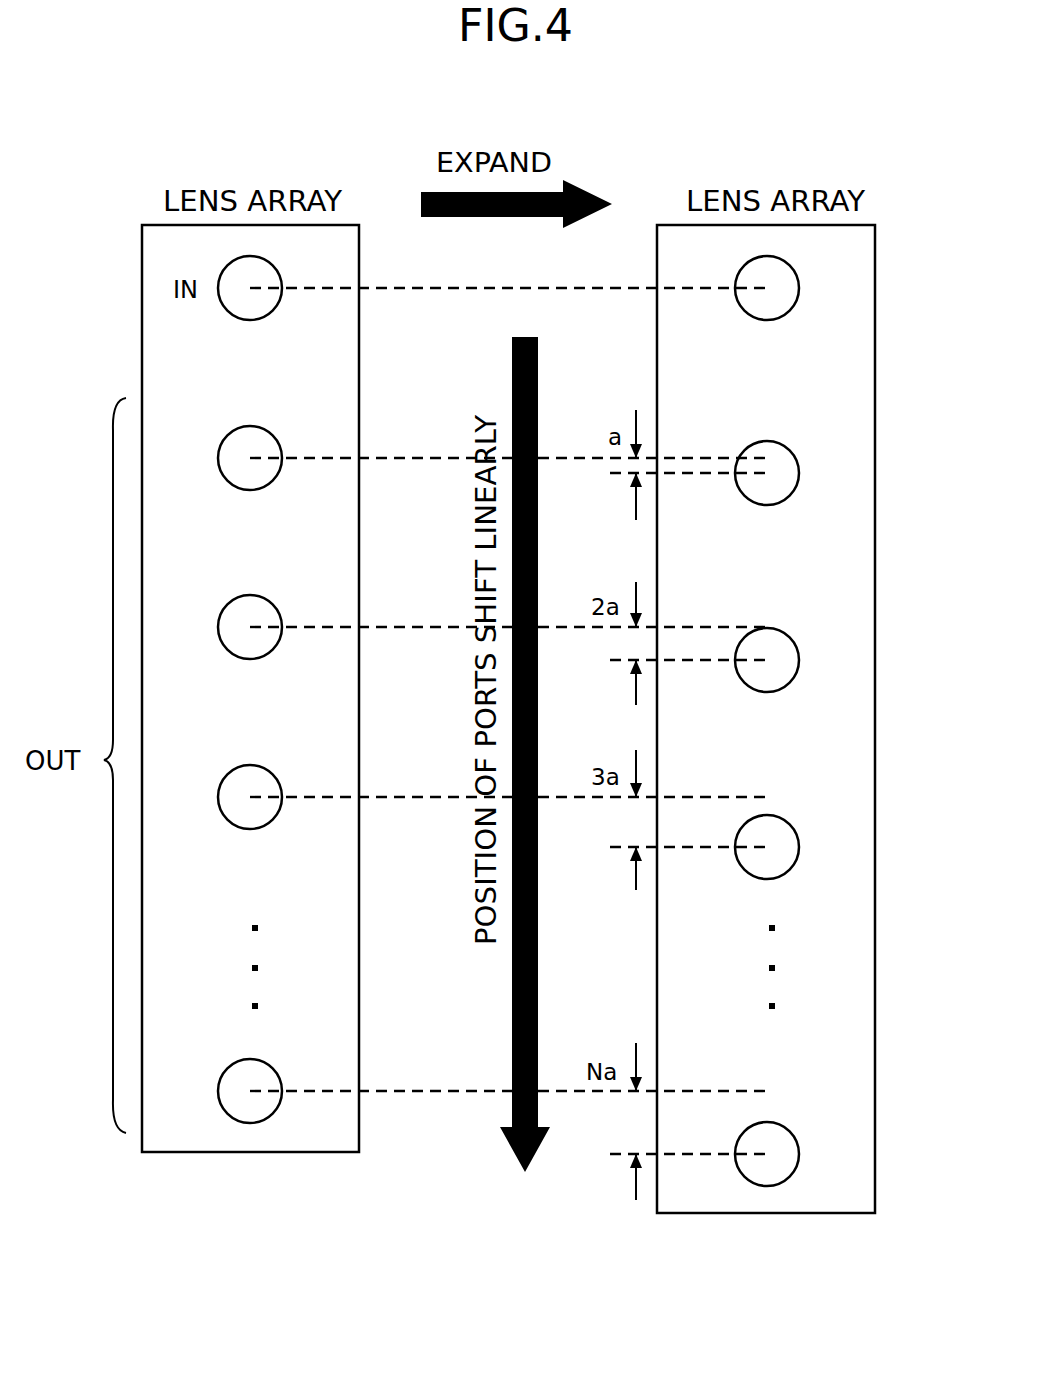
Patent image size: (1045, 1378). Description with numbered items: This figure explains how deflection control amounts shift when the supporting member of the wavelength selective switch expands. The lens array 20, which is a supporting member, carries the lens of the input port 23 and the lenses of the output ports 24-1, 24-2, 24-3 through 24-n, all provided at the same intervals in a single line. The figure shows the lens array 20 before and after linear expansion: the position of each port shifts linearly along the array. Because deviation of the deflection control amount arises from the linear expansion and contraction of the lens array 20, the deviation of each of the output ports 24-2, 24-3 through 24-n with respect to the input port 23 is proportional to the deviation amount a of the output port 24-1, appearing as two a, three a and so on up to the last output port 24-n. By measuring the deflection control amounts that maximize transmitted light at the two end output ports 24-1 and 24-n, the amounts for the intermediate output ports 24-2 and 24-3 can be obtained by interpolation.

The lens array 20 is at (359, 266).
The input port 23 is at (273, 266).
The output port 24-1 is at (273, 436).
The output port 24-2 is at (273, 605).
The output port 24-3 is at (273, 775).
The output port 24-n is at (273, 1069).